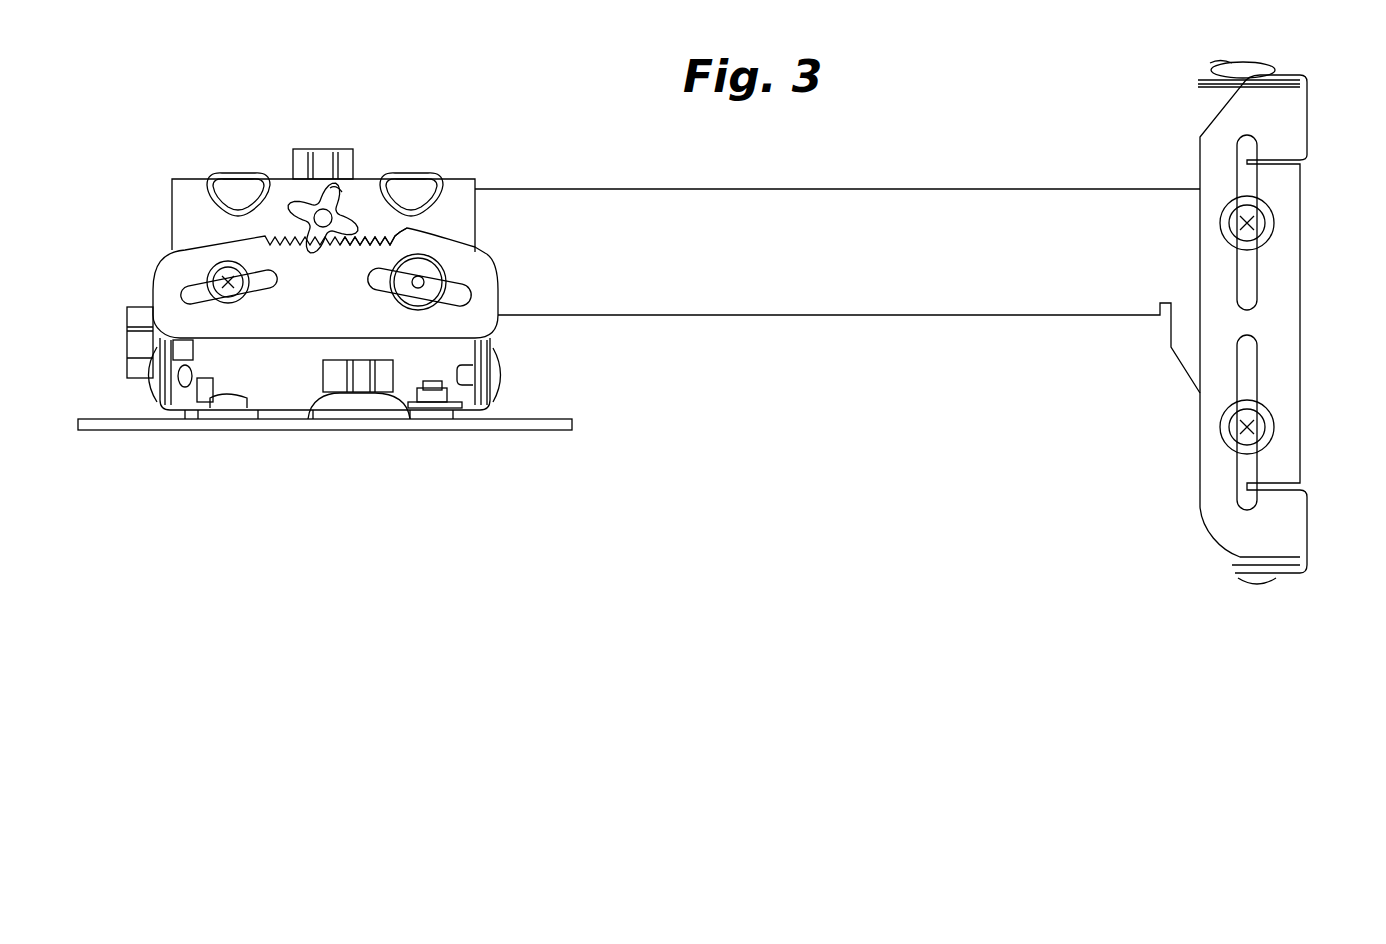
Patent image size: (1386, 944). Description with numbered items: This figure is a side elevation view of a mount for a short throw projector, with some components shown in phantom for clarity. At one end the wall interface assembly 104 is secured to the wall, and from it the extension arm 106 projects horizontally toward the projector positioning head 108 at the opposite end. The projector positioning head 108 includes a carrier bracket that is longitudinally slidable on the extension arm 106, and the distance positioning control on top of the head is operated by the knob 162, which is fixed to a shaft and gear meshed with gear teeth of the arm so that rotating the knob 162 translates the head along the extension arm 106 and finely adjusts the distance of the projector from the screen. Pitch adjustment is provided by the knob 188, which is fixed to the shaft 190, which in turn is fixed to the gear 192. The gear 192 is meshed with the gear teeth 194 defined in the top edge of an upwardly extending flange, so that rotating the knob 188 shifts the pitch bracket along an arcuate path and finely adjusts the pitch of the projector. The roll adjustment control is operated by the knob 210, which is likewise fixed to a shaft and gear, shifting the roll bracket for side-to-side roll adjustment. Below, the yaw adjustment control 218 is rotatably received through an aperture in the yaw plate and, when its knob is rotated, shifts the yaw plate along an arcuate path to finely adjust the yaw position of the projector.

The wall interface assembly 104 is at (1308, 525).
The extension arm 106 is at (858, 202).
The projector positioning head 108 is at (372, 180).
The knob 162 is at (325, 157).
The knob 188 is at (303, 198).
The shaft 190 is at (342, 192).
The gear 192 is at (295, 213).
The gear teeth 194 is at (372, 240).
The knob 210 is at (127, 328).
The yaw adjustment control 218 is at (360, 385).